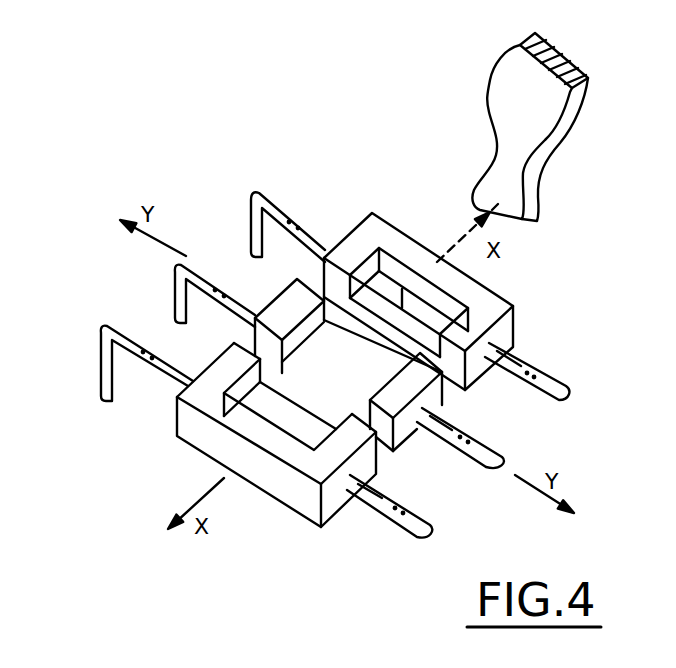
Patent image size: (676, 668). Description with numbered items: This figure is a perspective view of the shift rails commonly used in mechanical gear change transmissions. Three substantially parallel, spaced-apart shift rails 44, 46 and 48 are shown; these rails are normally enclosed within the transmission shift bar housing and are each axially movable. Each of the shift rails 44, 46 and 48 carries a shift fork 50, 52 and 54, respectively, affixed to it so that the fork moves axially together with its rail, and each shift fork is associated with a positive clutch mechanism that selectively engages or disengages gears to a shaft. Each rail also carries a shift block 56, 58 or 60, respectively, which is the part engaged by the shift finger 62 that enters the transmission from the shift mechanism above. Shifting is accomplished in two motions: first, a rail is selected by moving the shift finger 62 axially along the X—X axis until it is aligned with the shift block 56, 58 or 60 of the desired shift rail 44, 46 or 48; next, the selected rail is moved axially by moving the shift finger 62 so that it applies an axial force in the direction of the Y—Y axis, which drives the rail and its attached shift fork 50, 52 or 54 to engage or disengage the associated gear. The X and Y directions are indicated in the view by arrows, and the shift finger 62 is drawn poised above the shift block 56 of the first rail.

The shift rail 44 is at (546, 374).
The shift rail 46 is at (493, 442).
The shift rail 48 is at (423, 518).
The shift fork 50 is at (251, 226).
The shift fork 52 is at (184, 300).
The shift fork 54 is at (110, 378).
The shift block 56 is at (404, 292).
The shift block 58 is at (377, 378).
The shift block 60 is at (321, 435).
The shift finger 62 is at (587, 101).